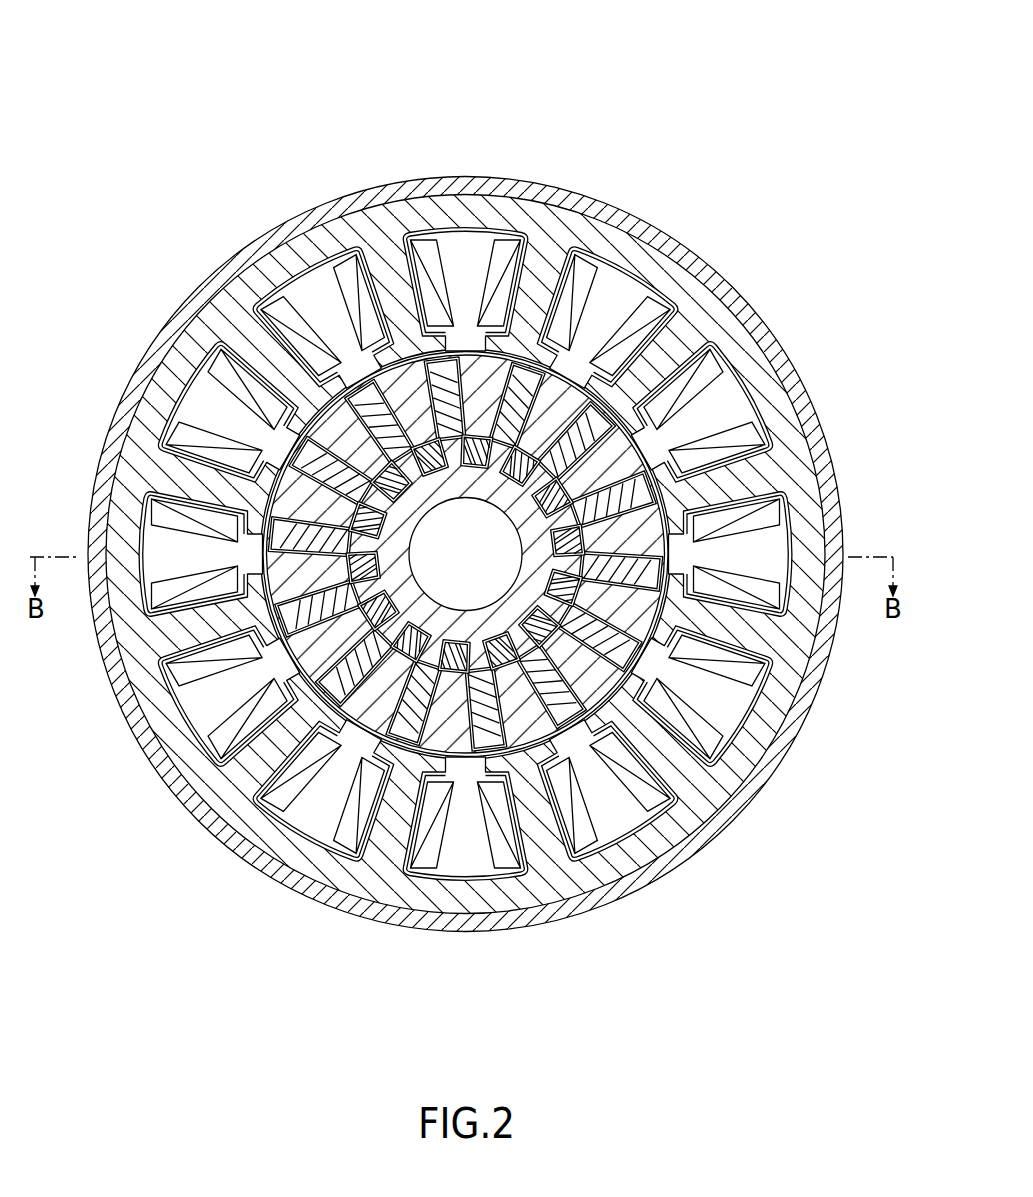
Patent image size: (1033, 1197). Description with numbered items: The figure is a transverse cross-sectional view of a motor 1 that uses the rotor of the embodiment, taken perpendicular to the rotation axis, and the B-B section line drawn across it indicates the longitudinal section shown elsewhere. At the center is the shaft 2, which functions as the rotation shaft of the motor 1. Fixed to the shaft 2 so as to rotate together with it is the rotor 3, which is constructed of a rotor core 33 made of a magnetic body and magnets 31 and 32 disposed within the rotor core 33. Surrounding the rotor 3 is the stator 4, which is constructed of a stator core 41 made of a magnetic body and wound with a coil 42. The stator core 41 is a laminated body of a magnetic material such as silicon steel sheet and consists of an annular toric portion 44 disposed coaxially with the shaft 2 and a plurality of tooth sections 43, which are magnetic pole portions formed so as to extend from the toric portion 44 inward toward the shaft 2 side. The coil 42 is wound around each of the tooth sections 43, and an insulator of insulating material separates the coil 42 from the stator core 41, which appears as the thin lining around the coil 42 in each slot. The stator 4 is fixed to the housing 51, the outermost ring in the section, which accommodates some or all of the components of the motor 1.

The motor 1 is at (717, 100).
The shaft 2 is at (500, 537).
The rotor 3 is at (466, 757).
The magnet 31 is at (489, 754).
The magnet 32 is at (503, 742).
The rotor core 33 is at (443, 741).
The stator 4 is at (921, 650).
The stator core 41 is at (879, 690).
The coil 42 is at (765, 567).
The tooth section 43 is at (740, 641).
The toric portion 44 is at (750, 744).
The housing 51 is at (748, 796).